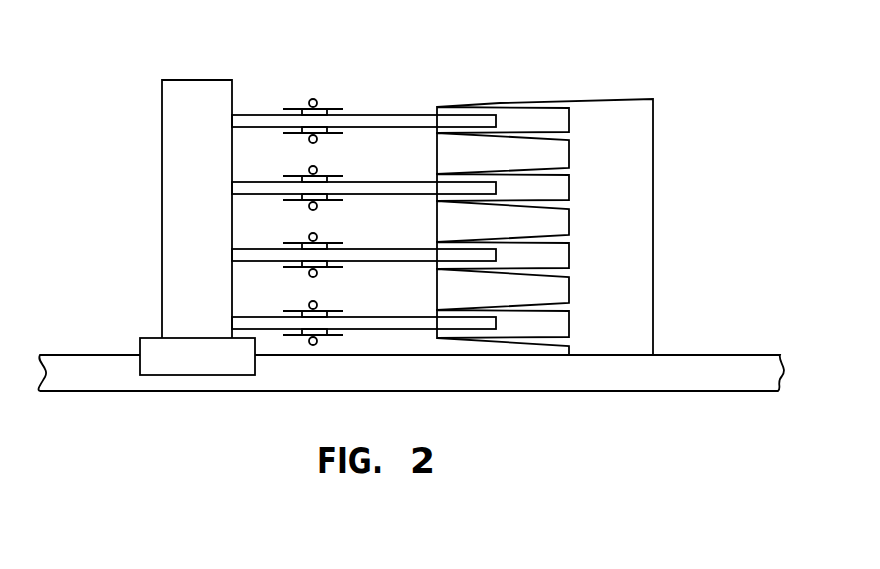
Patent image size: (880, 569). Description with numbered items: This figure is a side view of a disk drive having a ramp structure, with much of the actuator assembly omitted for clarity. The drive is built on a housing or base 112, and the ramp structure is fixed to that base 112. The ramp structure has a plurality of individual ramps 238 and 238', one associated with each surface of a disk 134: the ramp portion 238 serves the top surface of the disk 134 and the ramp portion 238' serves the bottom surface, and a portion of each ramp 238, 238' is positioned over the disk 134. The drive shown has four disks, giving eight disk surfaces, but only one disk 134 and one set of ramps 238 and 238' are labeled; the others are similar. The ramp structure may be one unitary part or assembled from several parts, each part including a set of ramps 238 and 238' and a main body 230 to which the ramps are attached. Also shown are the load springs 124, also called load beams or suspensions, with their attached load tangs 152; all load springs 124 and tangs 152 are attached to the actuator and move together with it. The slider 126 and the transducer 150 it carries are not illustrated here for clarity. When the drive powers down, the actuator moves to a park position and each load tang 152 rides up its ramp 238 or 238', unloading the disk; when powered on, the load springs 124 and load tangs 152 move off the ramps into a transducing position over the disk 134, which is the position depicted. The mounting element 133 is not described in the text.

The base 112 is at (680, 355).
The mounting base 133 is at (152, 338).
The disk 134 is at (400, 114).
The magnetic transducer 150 is at (319, 96).
The load tang 152 is at (313, 99).
The slider 126 is at (326, 108).
The load spring 124 is at (331, 133).
The main body 230 is at (579, 201).
The ramp portion 238 is at (524, 90).
The ramp portion 238' is at (496, 153).